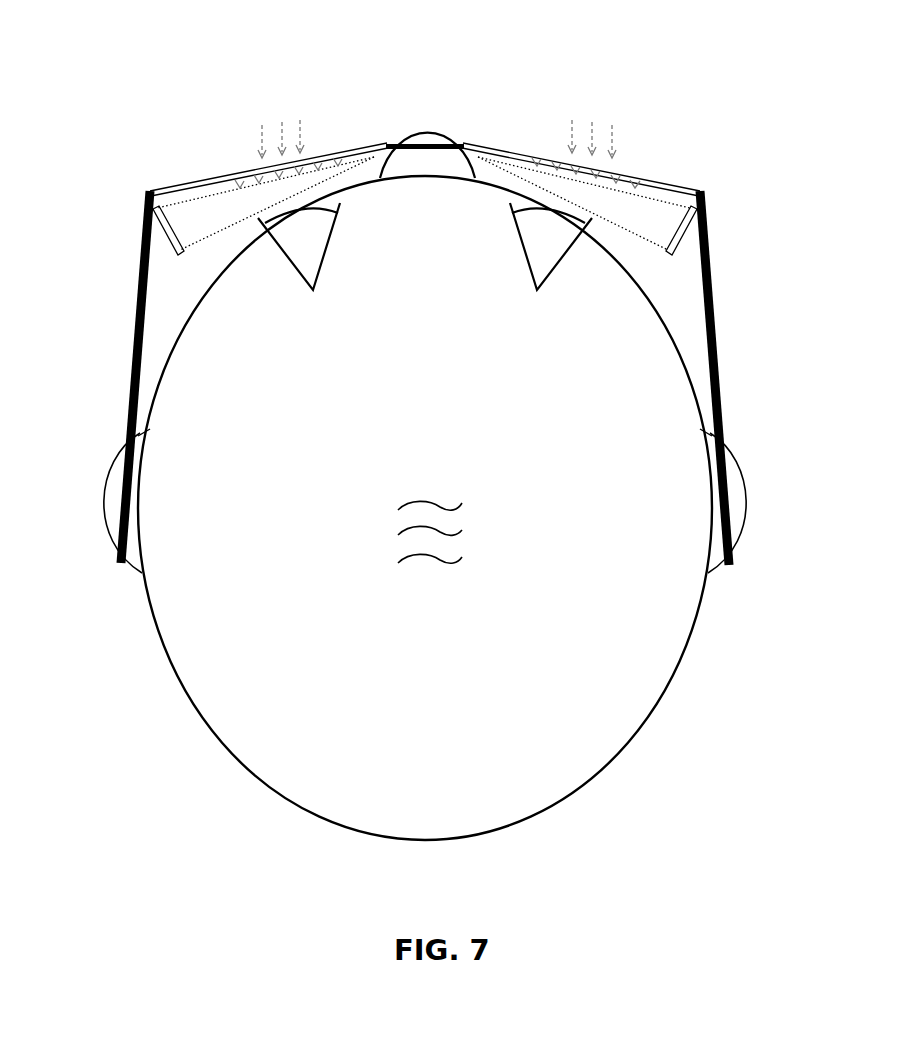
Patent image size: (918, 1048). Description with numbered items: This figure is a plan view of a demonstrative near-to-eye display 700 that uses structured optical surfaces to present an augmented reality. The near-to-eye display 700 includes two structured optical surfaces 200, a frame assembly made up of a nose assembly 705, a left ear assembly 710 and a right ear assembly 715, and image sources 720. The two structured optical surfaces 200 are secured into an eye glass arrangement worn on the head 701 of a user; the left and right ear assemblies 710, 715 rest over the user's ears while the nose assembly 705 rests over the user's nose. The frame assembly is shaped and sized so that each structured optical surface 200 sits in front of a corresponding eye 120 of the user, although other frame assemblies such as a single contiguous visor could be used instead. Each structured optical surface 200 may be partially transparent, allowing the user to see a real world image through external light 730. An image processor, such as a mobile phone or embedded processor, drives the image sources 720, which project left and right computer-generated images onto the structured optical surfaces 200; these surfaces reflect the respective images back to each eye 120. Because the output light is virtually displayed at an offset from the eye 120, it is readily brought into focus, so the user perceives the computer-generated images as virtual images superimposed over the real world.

The near-to-eye display 700 is at (624, 41).
The head 701 is at (442, 643).
The eye 120 is at (316, 288).
The structured optical surface 200 is at (200, 183).
The nose assembly 705 is at (440, 145).
The left ear assembly 710 is at (130, 378).
The right ear assembly 715 is at (717, 380).
The image source 720 is at (162, 232).
The external light 730 is at (300, 133).